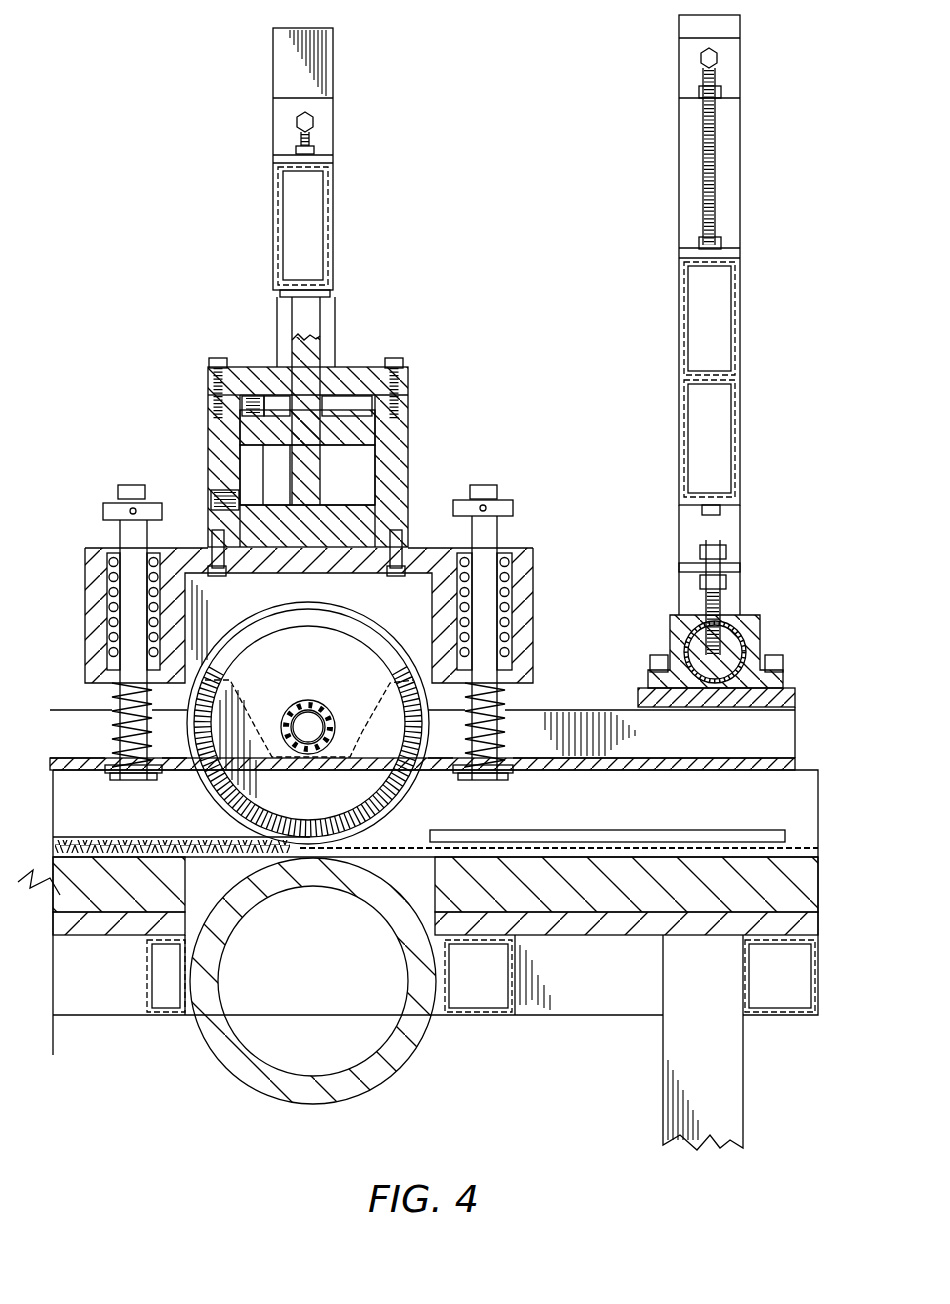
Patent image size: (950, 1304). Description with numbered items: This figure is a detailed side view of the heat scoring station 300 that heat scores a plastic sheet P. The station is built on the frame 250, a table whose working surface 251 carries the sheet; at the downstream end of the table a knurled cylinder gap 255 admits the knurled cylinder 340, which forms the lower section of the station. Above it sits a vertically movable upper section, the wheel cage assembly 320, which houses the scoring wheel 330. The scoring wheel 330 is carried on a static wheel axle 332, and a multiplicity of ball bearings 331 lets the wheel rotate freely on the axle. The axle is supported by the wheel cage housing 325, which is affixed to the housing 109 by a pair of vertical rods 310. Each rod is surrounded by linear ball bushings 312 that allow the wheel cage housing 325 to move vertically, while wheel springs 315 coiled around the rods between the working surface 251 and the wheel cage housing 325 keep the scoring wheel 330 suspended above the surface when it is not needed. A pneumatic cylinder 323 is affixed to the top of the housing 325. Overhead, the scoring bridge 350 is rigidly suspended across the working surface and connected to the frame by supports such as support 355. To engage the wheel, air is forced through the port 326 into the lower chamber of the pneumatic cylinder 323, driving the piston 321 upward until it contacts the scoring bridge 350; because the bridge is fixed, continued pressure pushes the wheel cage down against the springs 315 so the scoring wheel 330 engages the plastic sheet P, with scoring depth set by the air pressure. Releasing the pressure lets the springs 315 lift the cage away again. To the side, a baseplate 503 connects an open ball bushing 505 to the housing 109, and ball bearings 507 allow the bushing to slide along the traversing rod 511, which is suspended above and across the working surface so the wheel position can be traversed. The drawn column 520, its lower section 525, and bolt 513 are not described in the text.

The heat scoring station 300 is at (312, 436).
The wheel cage assembly 320 is at (304, 302).
The scoring bridge 350 is at (337, 230).
The support 355 is at (278, 315).
The piston 321 is at (318, 312).
The pneumatic cylinder 323 is at (355, 365).
The port 326 is at (353, 468).
The wheel cage housing 325 is at (520, 547).
The vertical rod 310 is at (128, 488).
The linear ball bushing 312 is at (110, 592).
The wheel spring 315 is at (105, 703).
The scoring wheel 330 is at (282, 625).
The ball bearings 331 is at (323, 700).
The wheel axle 332 is at (300, 722).
The support column 520 is at (740, 440).
The lower column section 525 is at (738, 548).
The adjusting bolt 513 is at (725, 592).
The open ball bushing 505 is at (758, 622).
The traversing rod 511 is at (757, 640).
The ball bearings 507 is at (735, 658).
The baseplate 503 is at (798, 697).
The housing 109 is at (790, 742).
The plastic sheet P is at (137, 838).
The working surface 251 is at (795, 862).
The frame 250 is at (805, 922).
The knurled cylinder gap 255 is at (428, 1020).
The knurled cylinder 340 is at (395, 1066).